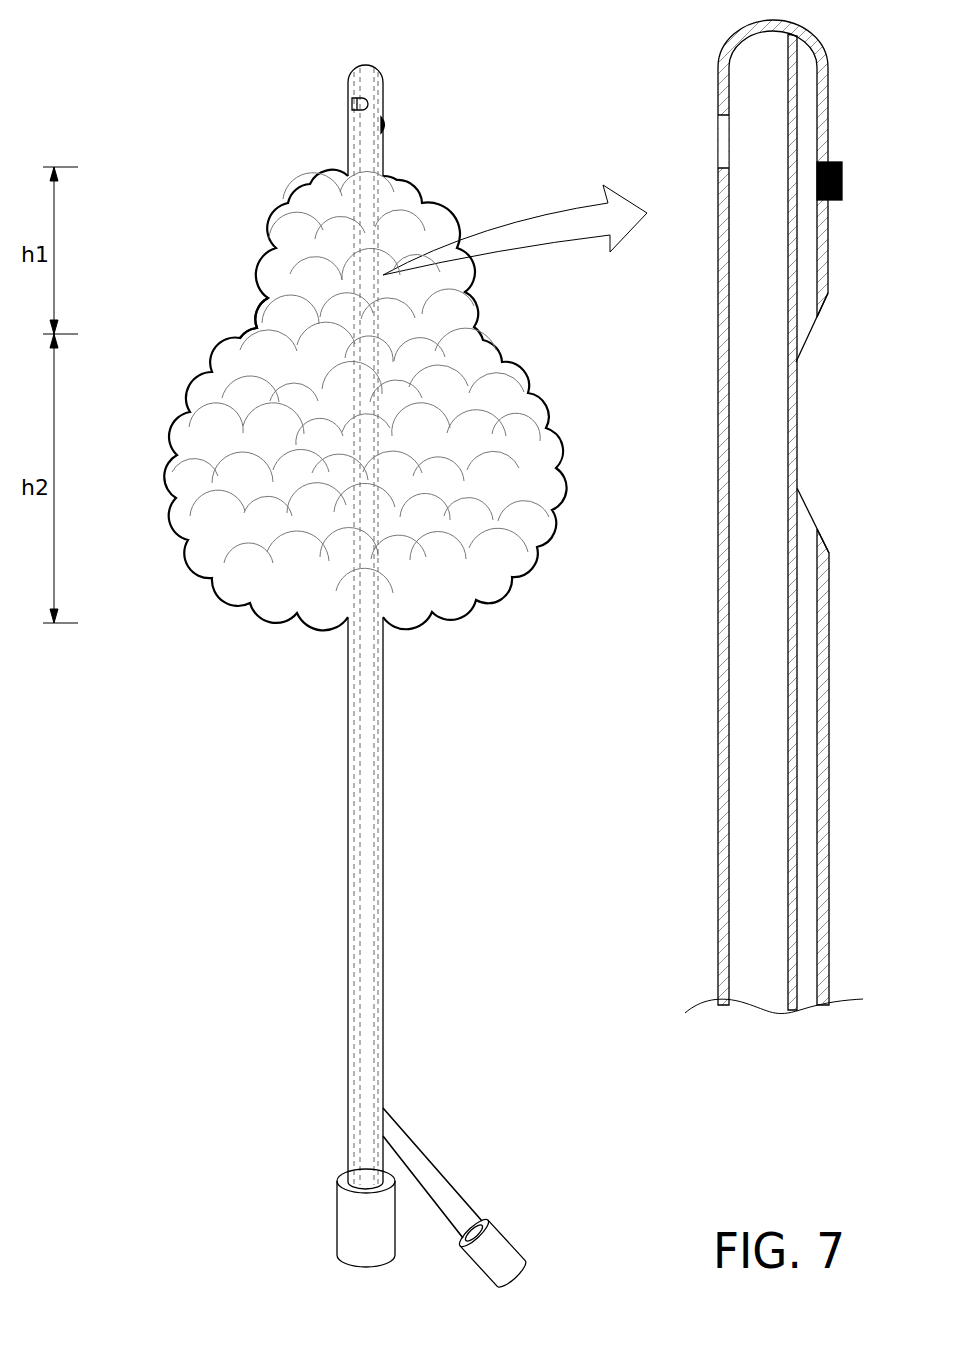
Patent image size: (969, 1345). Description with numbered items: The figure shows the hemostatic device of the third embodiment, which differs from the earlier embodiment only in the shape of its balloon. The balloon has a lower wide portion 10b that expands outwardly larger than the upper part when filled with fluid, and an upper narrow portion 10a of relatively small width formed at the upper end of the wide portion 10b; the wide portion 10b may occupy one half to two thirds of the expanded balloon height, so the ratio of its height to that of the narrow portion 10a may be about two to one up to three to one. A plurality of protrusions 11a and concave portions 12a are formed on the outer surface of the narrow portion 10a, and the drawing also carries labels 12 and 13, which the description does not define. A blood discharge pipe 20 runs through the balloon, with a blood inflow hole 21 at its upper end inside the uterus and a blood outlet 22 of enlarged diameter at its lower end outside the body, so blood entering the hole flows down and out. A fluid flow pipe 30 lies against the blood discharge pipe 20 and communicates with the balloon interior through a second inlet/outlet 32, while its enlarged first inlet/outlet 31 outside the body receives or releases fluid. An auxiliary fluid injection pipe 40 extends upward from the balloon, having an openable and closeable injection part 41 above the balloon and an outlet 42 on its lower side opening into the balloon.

The narrow portion 10a is at (294, 274).
The wide portion 10b is at (211, 514).
The protrusion 11a is at (197, 400).
The expandable body 12 is at (487, 603).
The concave portion 12a is at (198, 402).
The distal end of expandable body 13 is at (333, 214).
The blood discharge pipe 20 is at (368, 64).
The blood inflow hole 21 is at (352, 105).
The blood outlet 22 is at (362, 1267).
The fluid flow pipe 30 is at (388, 1062).
The first inlet/outlet 31 is at (527, 1283).
The second inlet/outlet 32 is at (500, 322).
The auxiliary fluid injection pipe 40 is at (386, 126).
The injection part 41 is at (843, 182).
The outlet 42 is at (808, 338).